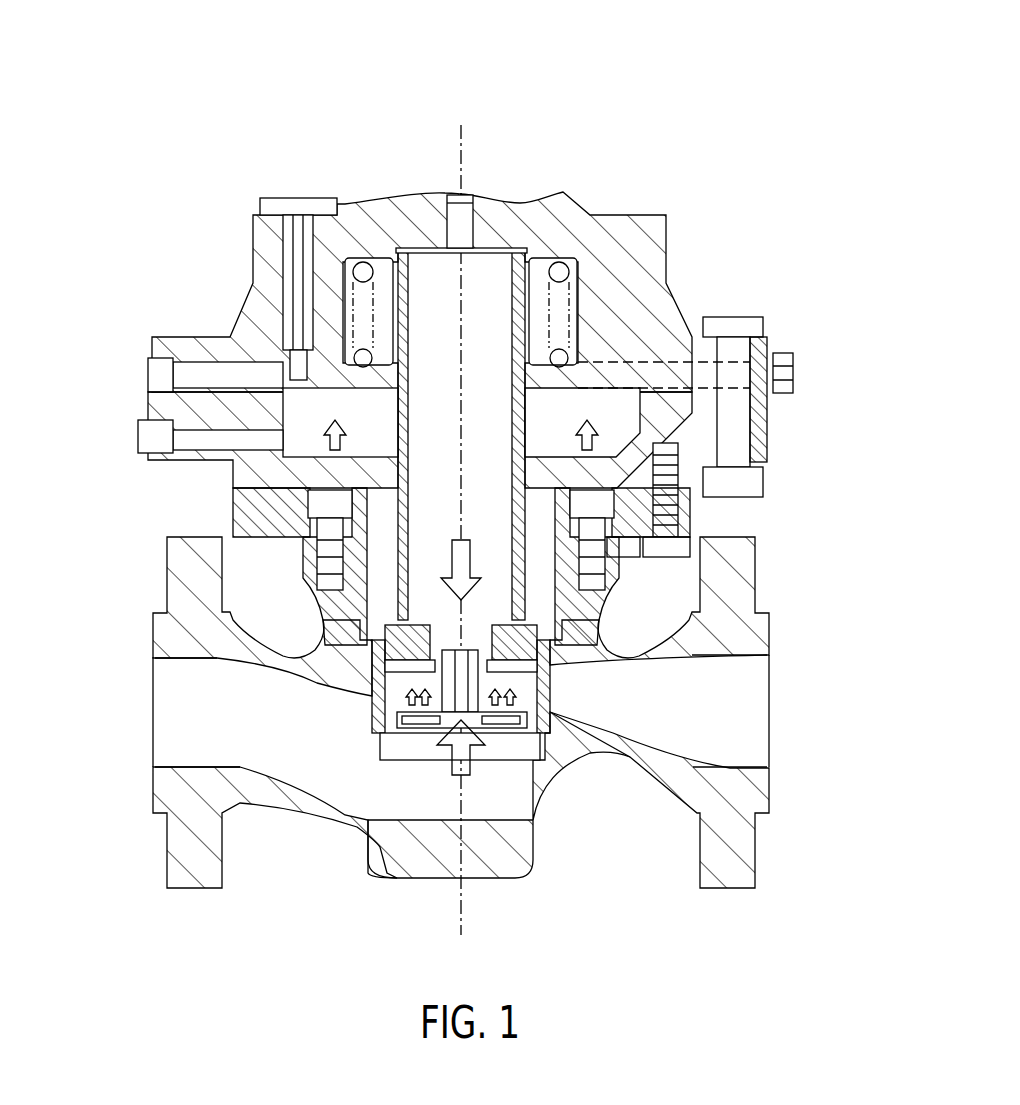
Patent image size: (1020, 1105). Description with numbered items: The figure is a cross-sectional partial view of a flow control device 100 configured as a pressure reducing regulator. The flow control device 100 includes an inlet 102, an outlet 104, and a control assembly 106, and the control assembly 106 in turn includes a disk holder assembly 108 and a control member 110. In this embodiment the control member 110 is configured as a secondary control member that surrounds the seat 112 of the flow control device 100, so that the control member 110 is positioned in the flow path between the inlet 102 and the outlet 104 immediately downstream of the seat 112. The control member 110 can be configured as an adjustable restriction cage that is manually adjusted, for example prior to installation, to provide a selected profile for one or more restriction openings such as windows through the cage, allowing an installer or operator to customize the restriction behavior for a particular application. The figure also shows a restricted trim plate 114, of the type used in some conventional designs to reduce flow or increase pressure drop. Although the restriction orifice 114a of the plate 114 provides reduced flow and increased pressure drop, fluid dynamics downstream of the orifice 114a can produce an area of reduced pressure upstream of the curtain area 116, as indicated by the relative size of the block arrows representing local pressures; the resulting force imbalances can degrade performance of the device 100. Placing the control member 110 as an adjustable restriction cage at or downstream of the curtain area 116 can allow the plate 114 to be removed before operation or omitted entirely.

The flow control device 100 is at (458, 473).
The inlet 102 is at (198, 739).
The outlet 104 is at (722, 739).
The control assembly 106 is at (394, 653).
The disk holder assembly 108 is at (545, 680).
The control member 110 is at (372, 680).
The seat 112 is at (377, 733).
The plate 114 is at (422, 728).
The restriction orifice 114a is at (467, 722).
The curtain area 116 is at (530, 698).